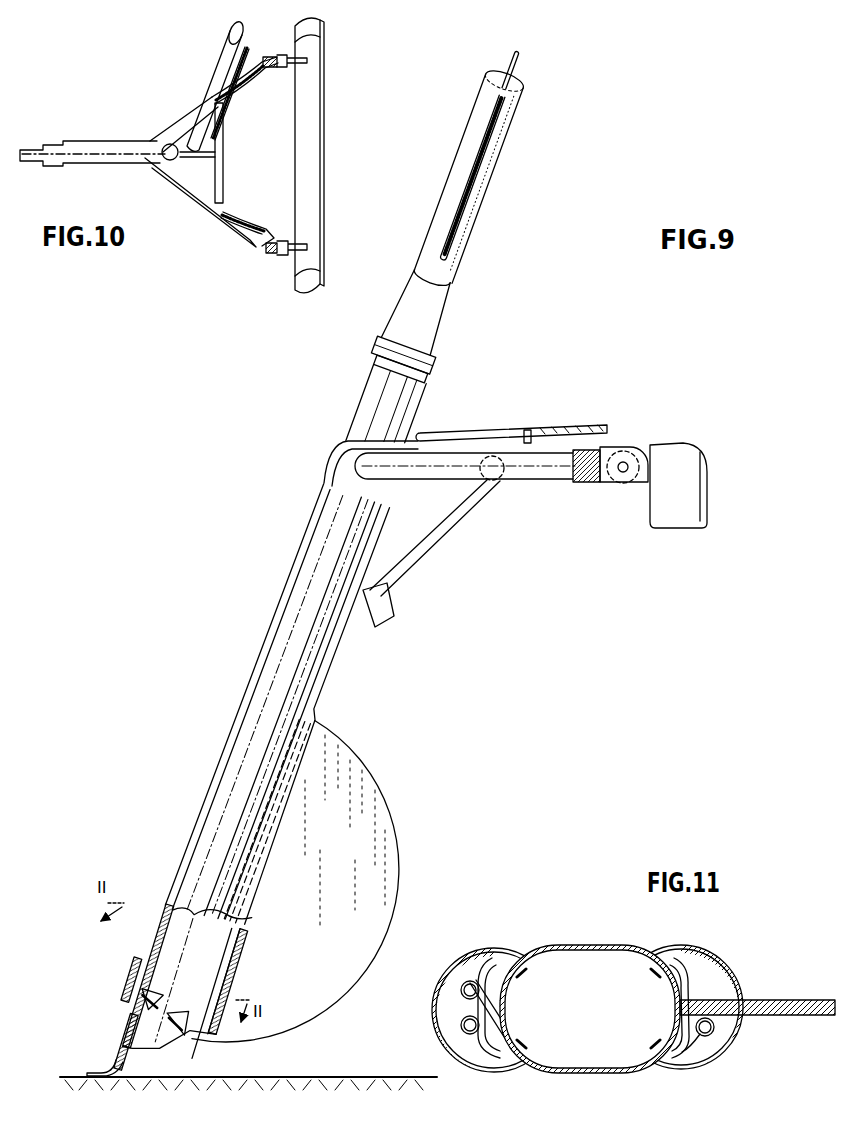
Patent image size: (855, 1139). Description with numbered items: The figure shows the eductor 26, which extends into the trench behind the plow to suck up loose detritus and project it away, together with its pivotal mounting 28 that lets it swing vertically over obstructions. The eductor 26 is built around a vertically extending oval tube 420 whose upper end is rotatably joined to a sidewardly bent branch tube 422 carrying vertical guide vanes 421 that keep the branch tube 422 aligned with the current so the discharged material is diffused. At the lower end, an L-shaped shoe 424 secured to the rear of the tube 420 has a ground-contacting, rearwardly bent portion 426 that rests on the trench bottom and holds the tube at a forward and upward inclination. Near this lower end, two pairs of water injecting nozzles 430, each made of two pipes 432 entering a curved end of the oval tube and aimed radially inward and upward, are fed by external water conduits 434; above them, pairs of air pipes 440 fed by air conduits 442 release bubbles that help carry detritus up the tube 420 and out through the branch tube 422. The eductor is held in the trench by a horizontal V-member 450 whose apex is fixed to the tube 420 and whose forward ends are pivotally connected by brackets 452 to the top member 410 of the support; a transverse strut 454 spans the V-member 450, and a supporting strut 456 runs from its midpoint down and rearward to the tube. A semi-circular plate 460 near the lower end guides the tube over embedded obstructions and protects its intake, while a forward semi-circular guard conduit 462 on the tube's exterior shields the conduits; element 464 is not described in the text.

In FIG. 9, the eductor 26 is at (346, 419).
In FIG. 9, the pivotal mounting 28 is at (539, 427).
In FIG. 10, the top member 410 is at (324, 231).
In FIG. 9, the top member 410 is at (703, 455).
In FIG. 9, the oval tube 420 is at (312, 648).
In FIG. 11, the oval tube 420 is at (605, 944).
In FIG. 10, the guide vanes 421 is at (224, 55).
In FIG. 9, the guide vanes 421 is at (460, 229).
In FIG. 10, the branch tube 422 is at (207, 81).
In FIG. 9, the branch tube 422 is at (455, 252).
In FIG. 9, the L-shaped shoe 424 is at (125, 1030).
In FIG. 9, the rearwardly bent portion 426 is at (103, 1073).
In FIG. 9, the water injecting nozzles 430 is at (150, 1000).
In FIG. 11, the water injecting nozzles 430 is at (490, 1056).
In FIG. 11, the pipes 432 is at (648, 975).
In FIG. 9, the water conduits 434 is at (247, 678).
In FIG. 11, the water conduits 434 is at (466, 1028).
In FIG. 9, the air pipes 440 is at (223, 963).
In FIG. 11, the air conduits 442 is at (462, 987).
In FIG. 10, the V-member 450 is at (256, 70).
In FIG. 9, the V-member 450 is at (530, 485).
In FIG. 10, the brackets 452 is at (286, 74).
In FIG. 9, the brackets 452 is at (639, 441).
In FIG. 10, the transverse strut 454 is at (224, 191).
In FIG. 9, the supporting strut 456 is at (466, 505).
In FIG. 9, the semi-circular plate 460 is at (373, 840).
In FIG. 9, the forward guard conduit 462 is at (282, 840).
In FIG. 9, the bracket 464 is at (137, 960).